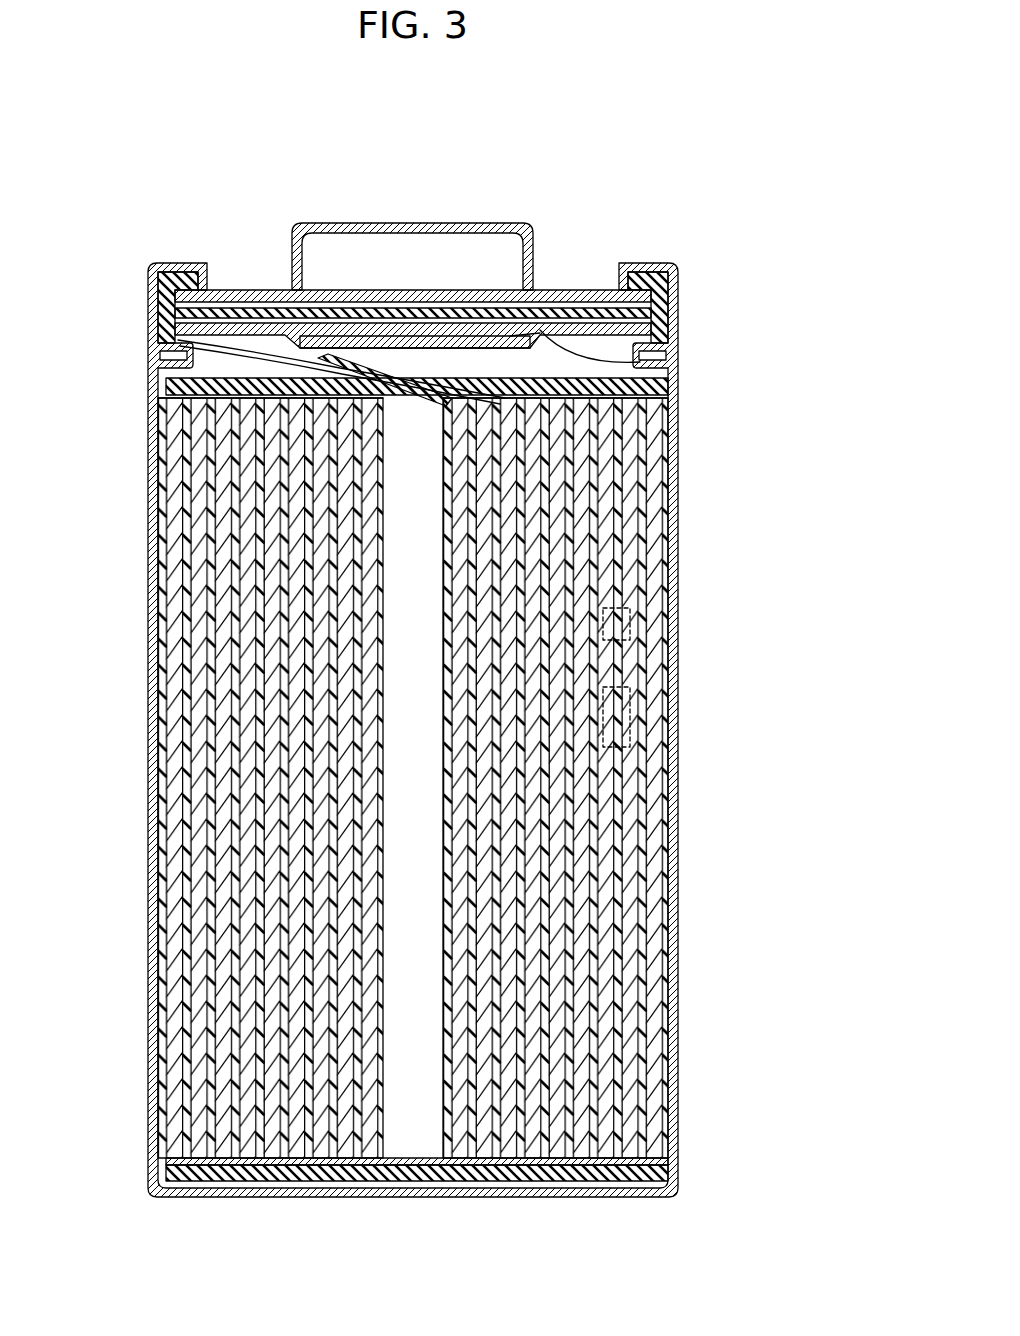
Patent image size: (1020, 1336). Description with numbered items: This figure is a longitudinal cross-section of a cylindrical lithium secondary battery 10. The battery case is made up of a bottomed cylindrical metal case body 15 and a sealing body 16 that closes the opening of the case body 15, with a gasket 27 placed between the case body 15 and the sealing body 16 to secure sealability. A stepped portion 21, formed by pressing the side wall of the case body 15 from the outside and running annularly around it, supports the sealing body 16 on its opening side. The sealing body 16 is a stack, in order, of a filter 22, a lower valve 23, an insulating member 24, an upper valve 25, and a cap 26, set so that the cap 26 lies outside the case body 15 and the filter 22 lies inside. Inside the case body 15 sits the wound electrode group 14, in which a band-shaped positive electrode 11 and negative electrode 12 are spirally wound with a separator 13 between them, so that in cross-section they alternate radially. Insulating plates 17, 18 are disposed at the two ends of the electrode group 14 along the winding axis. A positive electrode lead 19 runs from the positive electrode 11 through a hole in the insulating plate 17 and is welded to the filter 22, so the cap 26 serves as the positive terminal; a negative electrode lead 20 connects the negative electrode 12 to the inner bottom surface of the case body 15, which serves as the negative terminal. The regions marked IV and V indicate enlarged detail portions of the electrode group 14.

The lithium secondary battery 10 is at (719, 99).
The positive electrode 11 is at (632, 880).
The negative electrode 12 is at (640, 908).
The separator 13 is at (640, 962).
The electrode group 14 is at (760, 870).
The case body 15 is at (674, 260).
The sealing body 16 is at (524, 214).
The insulating plate 17 is at (670, 386).
The insulating plate 18 is at (672, 1172).
The positive electrode lead 19 is at (162, 336).
The negative electrode lead 20 is at (152, 1168).
The stepped portion 21 is at (170, 376).
The filter 22 is at (422, 330).
The lower valve 23 is at (332, 300).
The insulating member 24 is at (228, 287).
The upper valve 25 is at (357, 306).
The cap 26 is at (488, 227).
The gasket 27 is at (672, 298).
The detail region IV is at (642, 629).
The detail region V is at (627, 699).